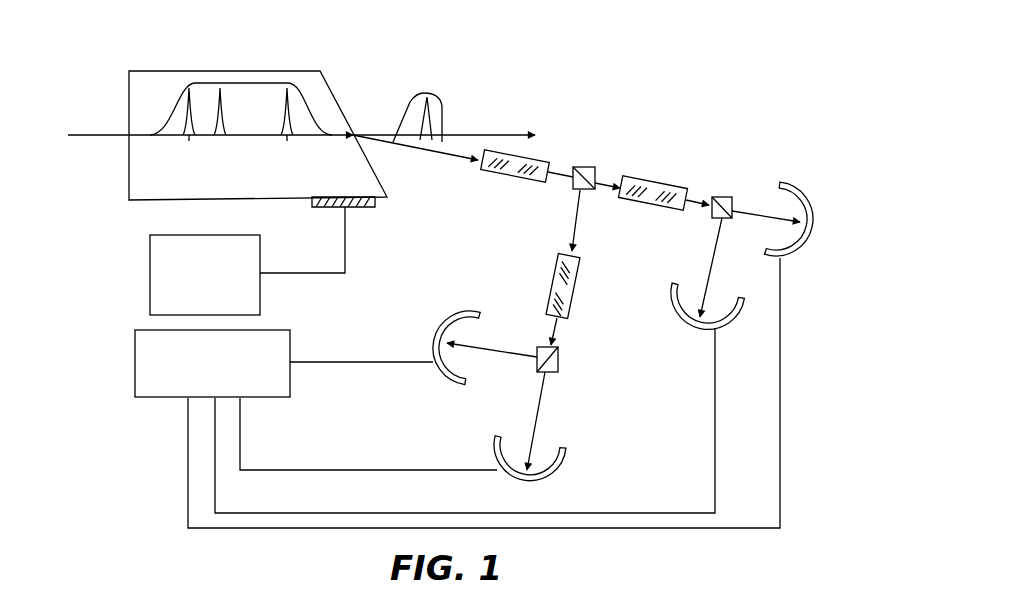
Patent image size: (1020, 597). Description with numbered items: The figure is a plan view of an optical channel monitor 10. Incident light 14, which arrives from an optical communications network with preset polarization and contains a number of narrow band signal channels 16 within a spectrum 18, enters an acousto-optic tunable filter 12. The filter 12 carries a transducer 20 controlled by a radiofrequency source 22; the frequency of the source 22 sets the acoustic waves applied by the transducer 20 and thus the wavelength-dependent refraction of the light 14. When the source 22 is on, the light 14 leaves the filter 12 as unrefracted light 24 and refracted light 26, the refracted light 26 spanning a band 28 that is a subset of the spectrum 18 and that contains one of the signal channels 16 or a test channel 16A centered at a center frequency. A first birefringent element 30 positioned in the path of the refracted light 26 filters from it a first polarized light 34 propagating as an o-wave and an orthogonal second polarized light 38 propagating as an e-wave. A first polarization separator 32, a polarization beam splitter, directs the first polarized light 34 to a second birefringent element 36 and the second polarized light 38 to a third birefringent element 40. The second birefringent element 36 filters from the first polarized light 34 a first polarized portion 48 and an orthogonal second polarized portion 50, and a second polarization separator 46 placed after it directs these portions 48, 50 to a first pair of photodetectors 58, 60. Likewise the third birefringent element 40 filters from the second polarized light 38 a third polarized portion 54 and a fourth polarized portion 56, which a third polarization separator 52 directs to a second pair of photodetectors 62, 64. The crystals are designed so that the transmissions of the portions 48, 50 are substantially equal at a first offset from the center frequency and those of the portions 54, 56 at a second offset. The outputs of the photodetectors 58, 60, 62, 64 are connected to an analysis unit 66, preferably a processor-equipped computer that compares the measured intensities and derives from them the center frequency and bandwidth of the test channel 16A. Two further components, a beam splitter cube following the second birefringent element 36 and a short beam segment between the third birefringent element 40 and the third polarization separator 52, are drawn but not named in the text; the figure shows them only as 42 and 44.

The optical channel monitor 10 is at (664, 72).
The acousto-optic tunable filter 12 is at (158, 70).
The incident light 14 is at (102, 133).
The signal channels 16 is at (228, 68).
The spectrum 18 is at (305, 93).
The transducer 20 is at (375, 213).
The radiofrequency source 22 is at (148, 258).
The unrefracted light 24 is at (485, 131).
The refracted light 26 is at (466, 159).
The band 28 is at (407, 97).
The test channel 16A is at (428, 118).
The first birefringent element 30 is at (542, 153).
The first polarization separator 32 is at (588, 196).
The first polarized light 34 is at (603, 177).
The second birefringent element 36 is at (640, 177).
The second polarized light 38 is at (577, 224).
The third birefringent element 40 is at (555, 272).
The polarizing beam splitter 42 is at (688, 207).
The beam 44 is at (558, 330).
The second polarization separator 46 is at (727, 197).
The first polarized portion 48 is at (757, 213).
The second polarized portion 50 is at (715, 267).
The third polarization separator 52 is at (558, 360).
The third polarized portion 54 is at (543, 412).
The fourth polarized portion 56 is at (500, 342).
The photodetector 58 is at (790, 255).
The photodetector 60 is at (680, 318).
The photodetector 62 is at (488, 438).
The photodetector 64 is at (450, 310).
The analysis unit 66 is at (292, 343).